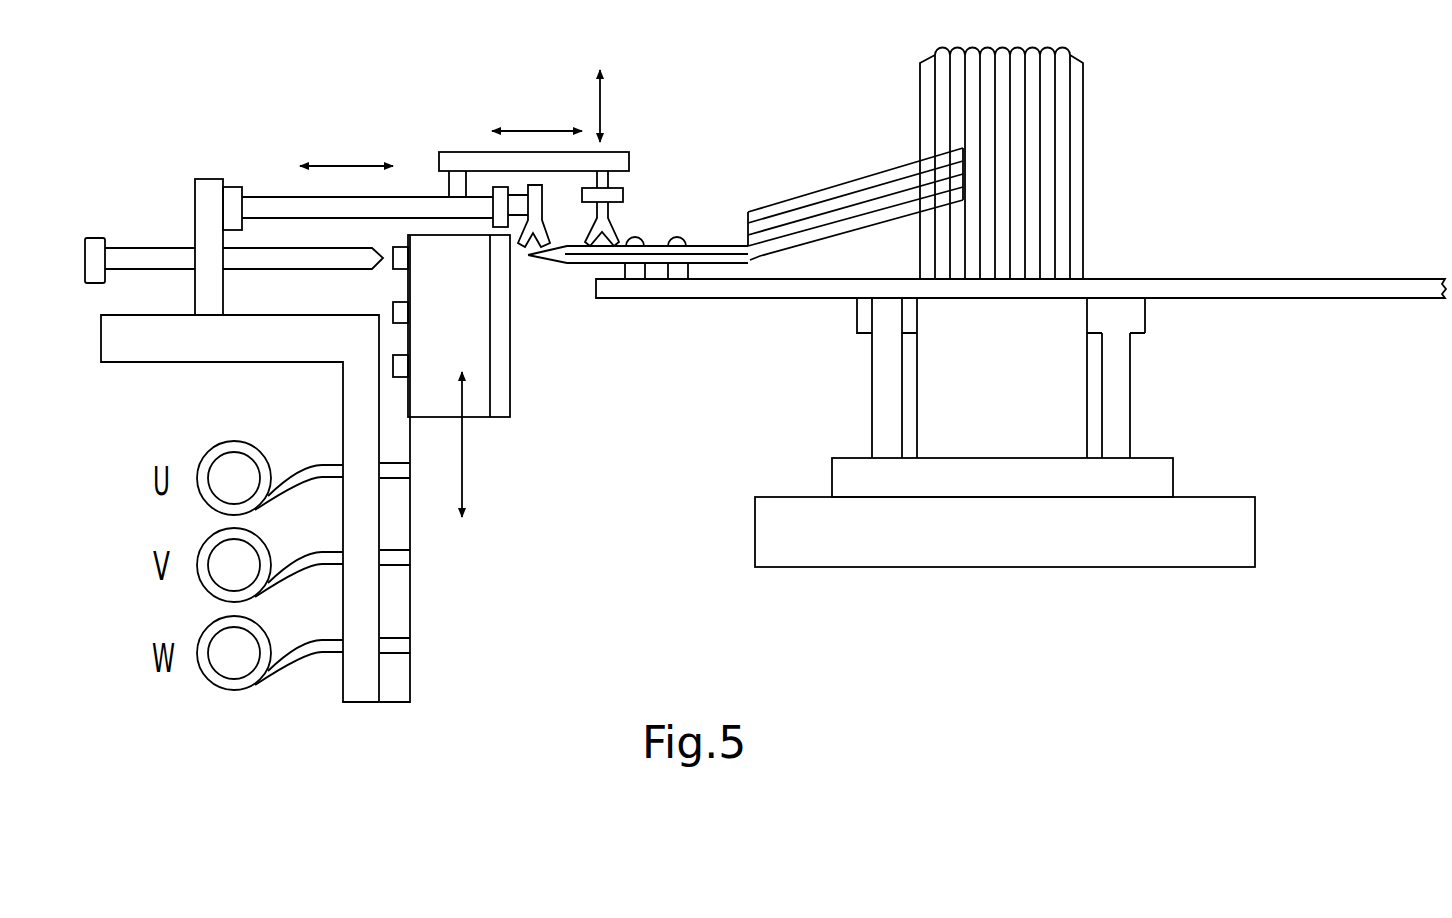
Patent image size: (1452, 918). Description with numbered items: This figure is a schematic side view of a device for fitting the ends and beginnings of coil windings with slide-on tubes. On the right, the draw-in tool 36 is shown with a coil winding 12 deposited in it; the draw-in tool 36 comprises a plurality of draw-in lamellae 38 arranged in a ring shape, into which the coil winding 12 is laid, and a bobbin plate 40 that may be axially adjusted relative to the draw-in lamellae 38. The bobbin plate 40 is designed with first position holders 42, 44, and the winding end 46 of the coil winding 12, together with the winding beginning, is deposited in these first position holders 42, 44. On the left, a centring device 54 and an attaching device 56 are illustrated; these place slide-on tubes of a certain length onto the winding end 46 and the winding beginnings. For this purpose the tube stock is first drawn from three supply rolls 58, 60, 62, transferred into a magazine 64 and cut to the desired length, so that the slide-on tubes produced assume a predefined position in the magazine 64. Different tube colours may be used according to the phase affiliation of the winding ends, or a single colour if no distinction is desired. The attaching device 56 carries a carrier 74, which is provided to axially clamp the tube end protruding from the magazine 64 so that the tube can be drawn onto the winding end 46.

The coil winding 12 is at (848, 183).
The draw-in tool 36 is at (1041, 164).
The draw-in lamellae 38 is at (1043, 167).
The bobbin plate 40 is at (1242, 277).
The first position holder 42 is at (632, 270).
The first position holder 44 is at (677, 270).
The winding end 46 is at (555, 267).
The centring device 54 is at (283, 247).
The attaching device 56 is at (479, 186).
The supply roll 58 is at (215, 458).
The supply roll 60 is at (215, 547).
The supply roll 62 is at (210, 670).
The magazine 64 is at (480, 393).
The carrier 74 is at (547, 233).